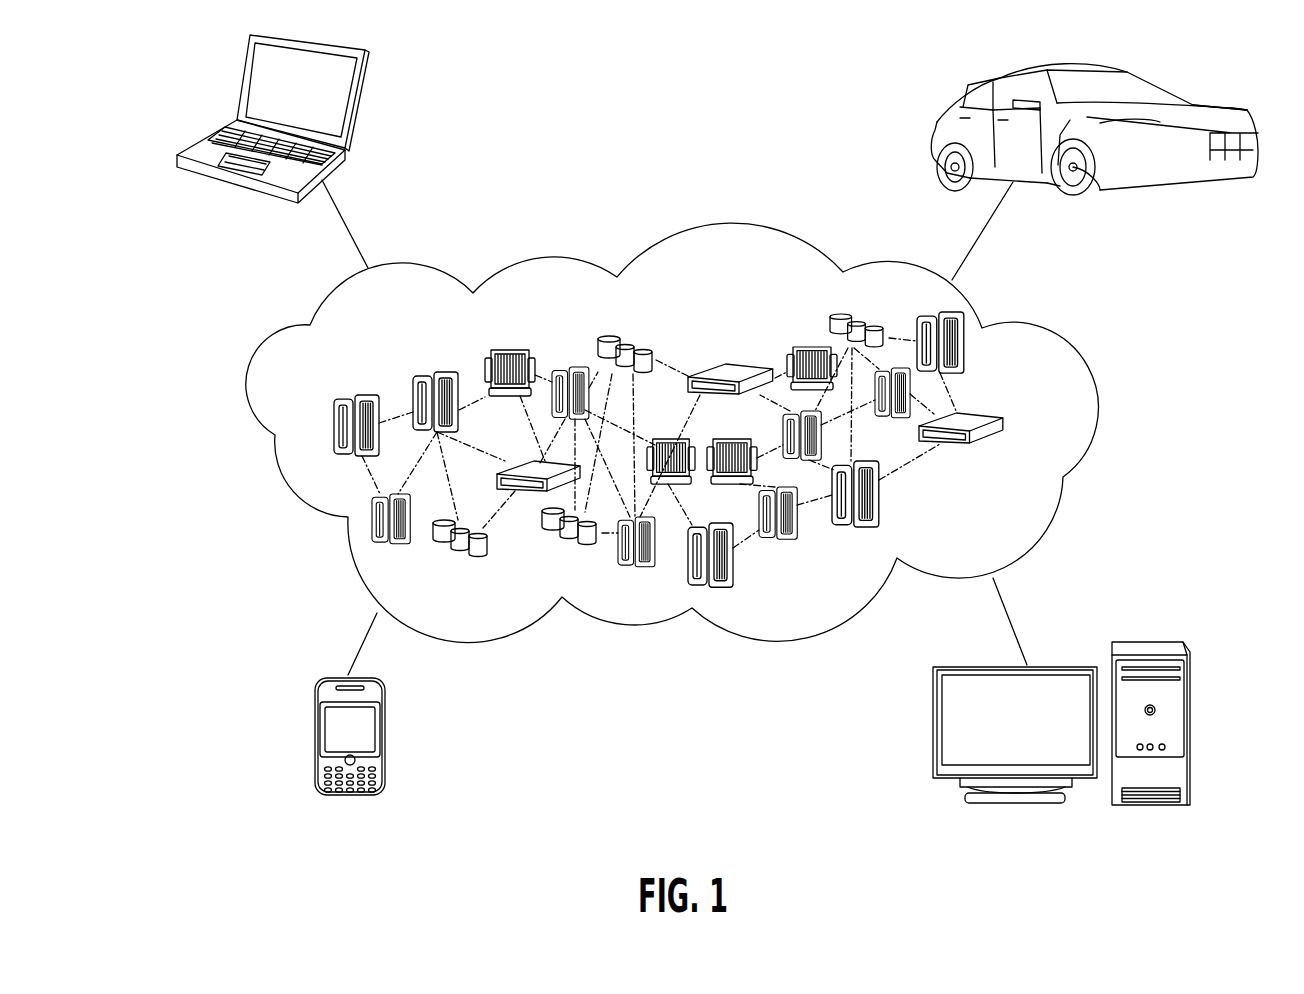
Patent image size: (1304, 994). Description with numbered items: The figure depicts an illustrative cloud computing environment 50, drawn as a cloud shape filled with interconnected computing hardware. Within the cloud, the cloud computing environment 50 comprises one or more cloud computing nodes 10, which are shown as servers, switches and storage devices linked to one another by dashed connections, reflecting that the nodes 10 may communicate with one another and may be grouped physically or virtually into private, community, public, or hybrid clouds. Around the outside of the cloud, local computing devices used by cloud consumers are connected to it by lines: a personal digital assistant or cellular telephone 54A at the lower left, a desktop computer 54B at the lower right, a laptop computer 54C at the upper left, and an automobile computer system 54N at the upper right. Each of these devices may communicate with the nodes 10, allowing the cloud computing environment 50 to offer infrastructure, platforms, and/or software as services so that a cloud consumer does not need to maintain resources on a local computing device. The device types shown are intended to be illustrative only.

The cloud computing nodes 10 is at (709, 432).
The cloud computing environment 50 is at (1072, 340).
The personal digital assistant or cellular telephone 54A is at (317, 742).
The desktop computer 54B is at (1158, 642).
The laptop computer 54C is at (357, 108).
The automobile computer system 54N is at (942, 115).